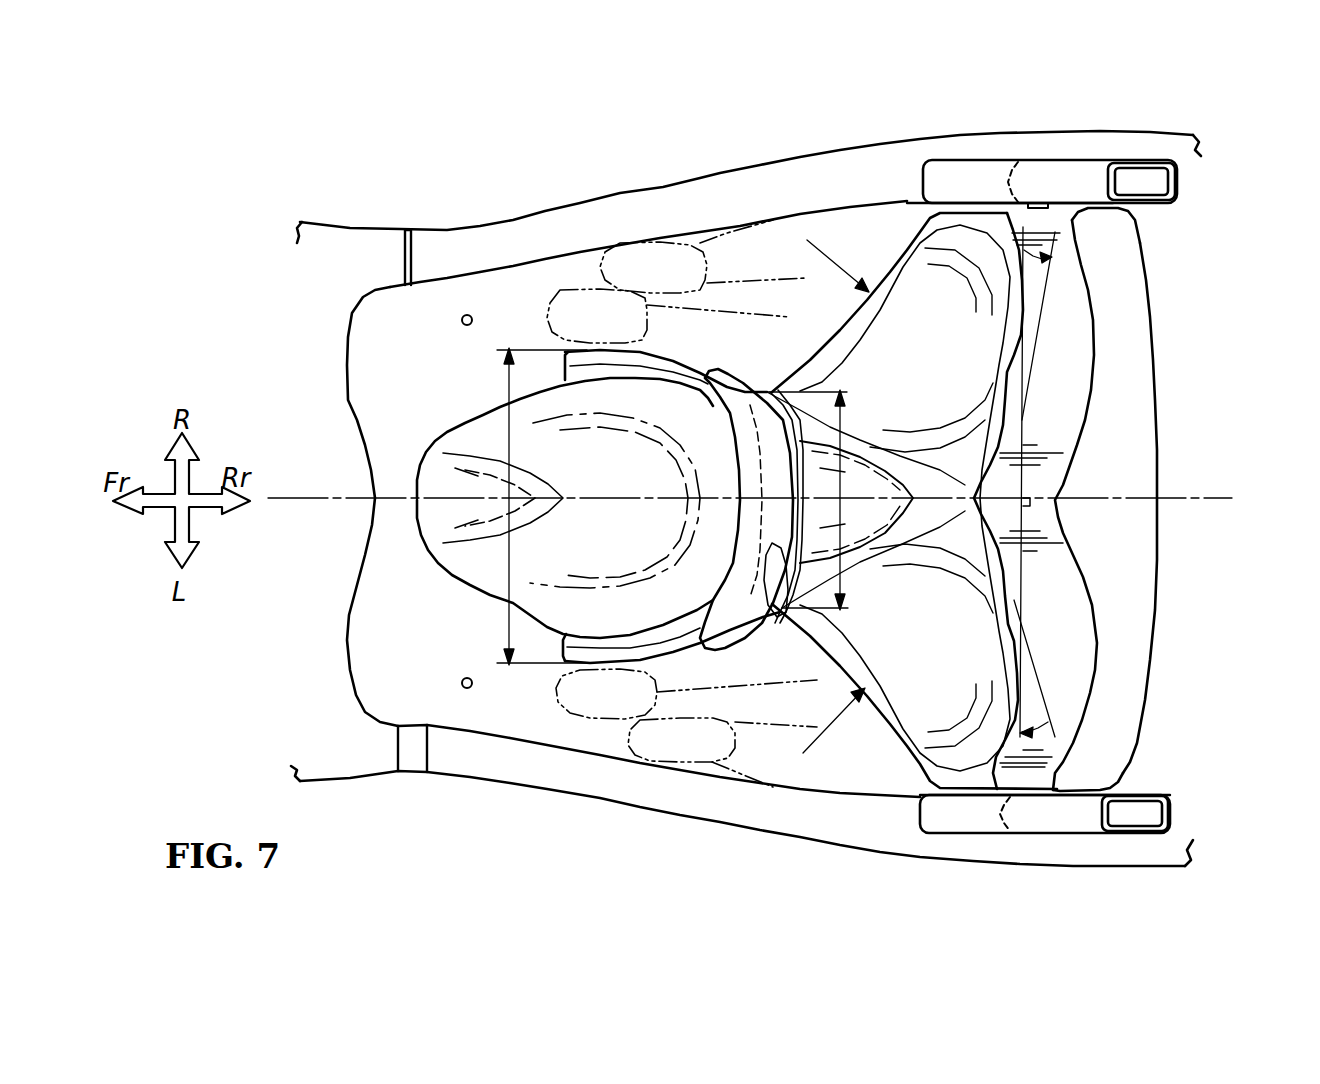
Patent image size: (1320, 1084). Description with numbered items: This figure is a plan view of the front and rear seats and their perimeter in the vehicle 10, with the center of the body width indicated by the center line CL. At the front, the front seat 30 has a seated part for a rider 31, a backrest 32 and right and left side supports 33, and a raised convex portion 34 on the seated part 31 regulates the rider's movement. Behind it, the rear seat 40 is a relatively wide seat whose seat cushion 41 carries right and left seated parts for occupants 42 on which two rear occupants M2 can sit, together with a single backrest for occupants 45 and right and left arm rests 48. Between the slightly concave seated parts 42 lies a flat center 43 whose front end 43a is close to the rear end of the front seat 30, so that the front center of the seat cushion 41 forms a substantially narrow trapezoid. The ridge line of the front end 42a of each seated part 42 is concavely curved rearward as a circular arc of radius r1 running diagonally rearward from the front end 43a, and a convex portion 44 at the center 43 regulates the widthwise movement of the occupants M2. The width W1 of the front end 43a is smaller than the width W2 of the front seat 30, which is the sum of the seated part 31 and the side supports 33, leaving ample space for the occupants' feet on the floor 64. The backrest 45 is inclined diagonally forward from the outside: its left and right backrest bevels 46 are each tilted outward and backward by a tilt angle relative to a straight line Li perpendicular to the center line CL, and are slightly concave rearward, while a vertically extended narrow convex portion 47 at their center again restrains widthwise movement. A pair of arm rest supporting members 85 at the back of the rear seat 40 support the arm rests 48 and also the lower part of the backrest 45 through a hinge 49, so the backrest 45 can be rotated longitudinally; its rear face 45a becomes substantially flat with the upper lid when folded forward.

The vehicle 10 is at (218, 119).
The front seat 30 is at (625, 484).
The seated part for a rider 31 is at (565, 396).
The backrest 32 is at (732, 377).
The side supports 33 is at (655, 506).
The convex portion 34 is at (429, 313).
The rear seat 40 is at (784, 210).
The seat cushion 41 is at (1038, 437).
The seated parts for occupants 42 is at (934, 278).
The front end of seated part 42a is at (889, 494).
The center 43 is at (939, 472).
The front end of the center 43a is at (767, 532).
The convex portion 44 is at (866, 475).
The backrest for occupants 45 is at (1171, 499).
The rear face of the backrest 45a is at (1214, 508).
The backrest bevels 46 is at (1068, 336).
The convex portion 47 is at (1139, 506).
The arm rests for occupants 48 is at (1048, 501).
The hinge 49 is at (1057, 501).
The floor 64 is at (414, 684).
The arm rest supporting members 85 is at (1144, 499).
The rear occupants M2 is at (682, 500).
The width of the front end of the rear seat W1 is at (807, 500).
The width of the front seat W2 is at (544, 506).
The radius r1 is at (835, 492).
The straight line Li is at (1038, 482).
The center line CL is at (753, 467).